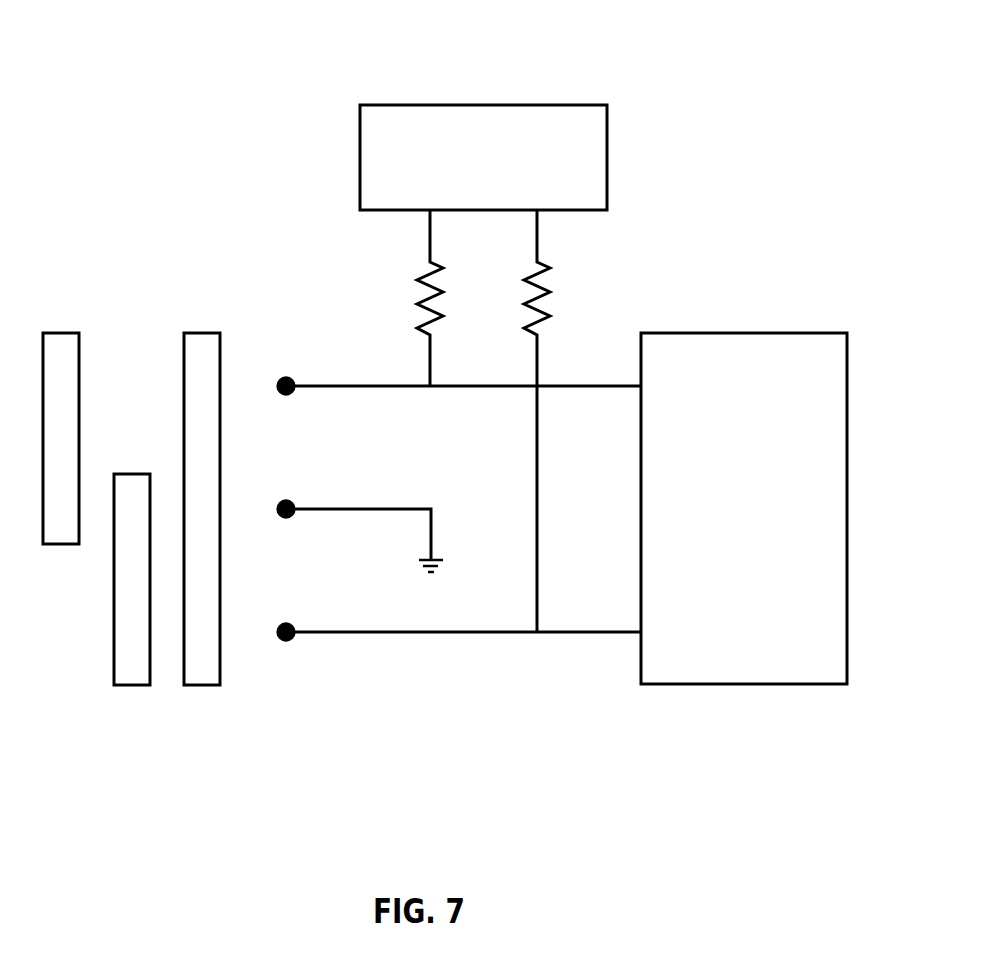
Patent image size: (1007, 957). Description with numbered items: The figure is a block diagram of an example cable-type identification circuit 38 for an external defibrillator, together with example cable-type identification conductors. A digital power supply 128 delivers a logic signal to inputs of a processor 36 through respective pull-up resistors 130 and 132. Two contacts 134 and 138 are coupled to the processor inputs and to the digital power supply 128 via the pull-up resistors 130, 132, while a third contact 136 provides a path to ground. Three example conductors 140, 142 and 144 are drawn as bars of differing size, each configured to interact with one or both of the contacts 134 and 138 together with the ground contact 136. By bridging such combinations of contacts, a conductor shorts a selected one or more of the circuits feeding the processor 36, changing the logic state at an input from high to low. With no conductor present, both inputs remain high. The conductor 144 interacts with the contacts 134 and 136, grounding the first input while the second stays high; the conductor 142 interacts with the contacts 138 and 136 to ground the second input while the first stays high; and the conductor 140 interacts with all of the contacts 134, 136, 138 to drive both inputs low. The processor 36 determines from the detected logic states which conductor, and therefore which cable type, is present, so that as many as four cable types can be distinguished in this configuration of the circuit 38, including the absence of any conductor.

The cable-type identification circuit 38 is at (692, 88).
The digital power supply 128 is at (607, 158).
The pull-up resistor 130 is at (420, 280).
The pull-up resistor 132 is at (550, 293).
The contact 134 is at (292, 394).
The contact 136 is at (292, 517).
The contact 138 is at (292, 640).
The processor 36 is at (744, 684).
The conductor 140 is at (202, 333).
The conductor 142 is at (130, 685).
The conductor 144 is at (62, 333).